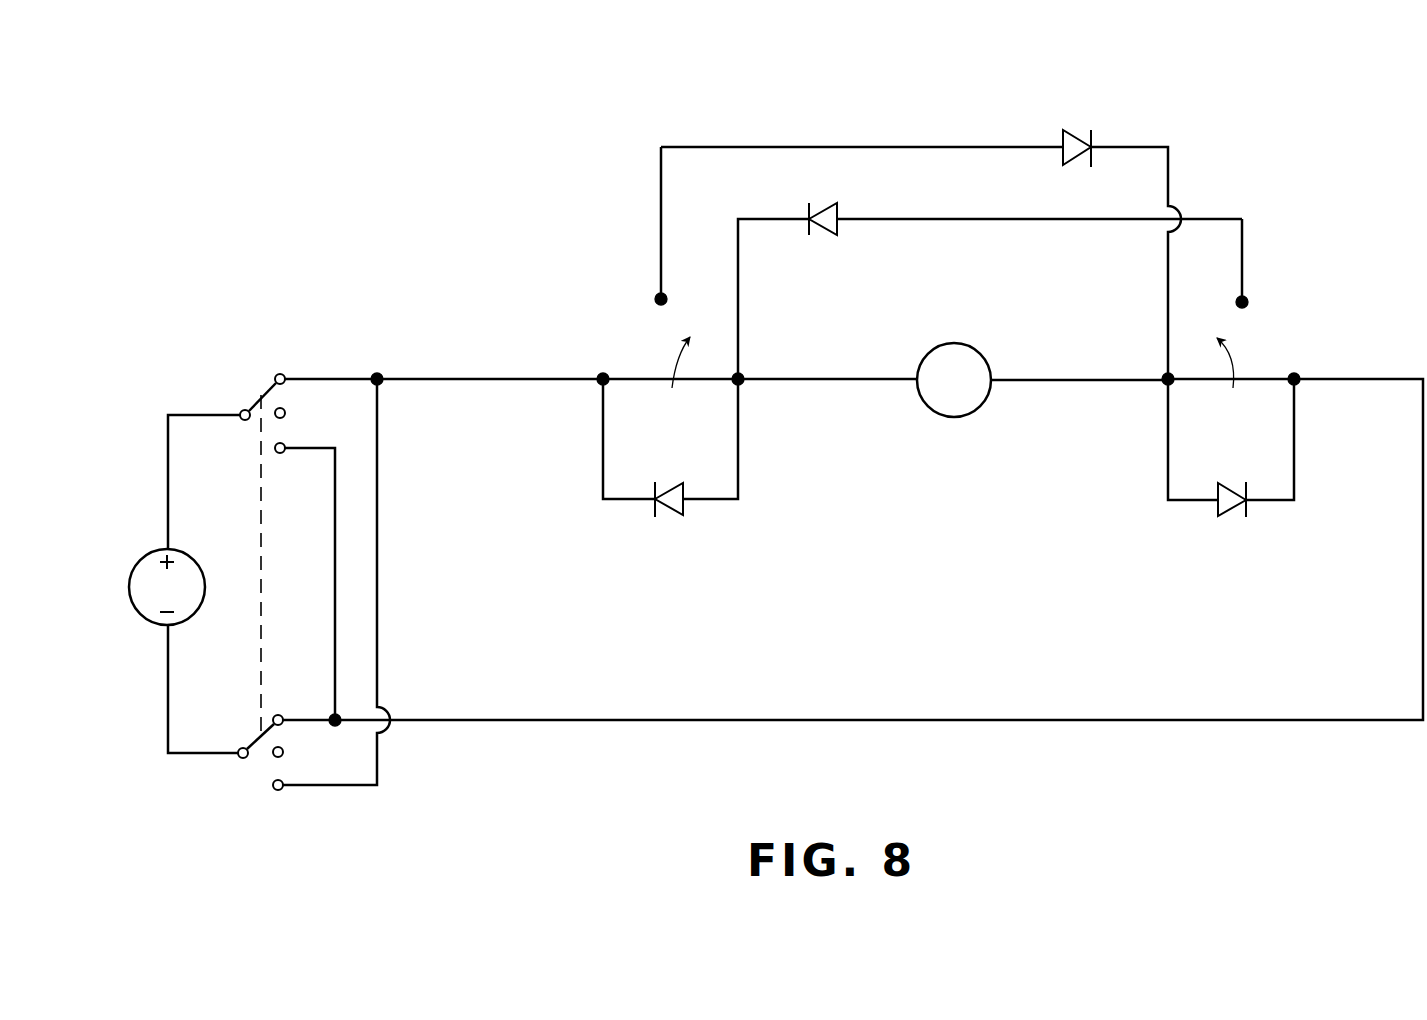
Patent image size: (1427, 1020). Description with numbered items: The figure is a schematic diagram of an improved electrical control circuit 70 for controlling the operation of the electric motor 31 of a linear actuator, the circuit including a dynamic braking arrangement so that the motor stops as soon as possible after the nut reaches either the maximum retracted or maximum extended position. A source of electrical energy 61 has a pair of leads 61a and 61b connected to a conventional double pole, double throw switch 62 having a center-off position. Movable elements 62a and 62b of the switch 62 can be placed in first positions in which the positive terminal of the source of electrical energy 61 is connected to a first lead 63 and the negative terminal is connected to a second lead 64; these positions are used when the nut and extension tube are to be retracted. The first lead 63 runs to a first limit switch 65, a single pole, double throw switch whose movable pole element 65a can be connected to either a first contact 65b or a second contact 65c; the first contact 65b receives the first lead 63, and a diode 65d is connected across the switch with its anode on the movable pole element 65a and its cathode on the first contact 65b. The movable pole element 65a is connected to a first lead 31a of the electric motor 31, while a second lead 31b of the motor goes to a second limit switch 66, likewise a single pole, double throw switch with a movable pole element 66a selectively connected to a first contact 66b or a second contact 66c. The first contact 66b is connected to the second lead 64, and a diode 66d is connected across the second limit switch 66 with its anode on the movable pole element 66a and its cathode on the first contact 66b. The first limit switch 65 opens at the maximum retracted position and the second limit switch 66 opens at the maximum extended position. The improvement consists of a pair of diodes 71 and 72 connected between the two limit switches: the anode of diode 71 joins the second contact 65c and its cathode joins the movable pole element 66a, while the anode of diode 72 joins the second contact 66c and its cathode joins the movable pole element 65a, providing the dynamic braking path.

The electric motor 31 is at (955, 415).
The first lead of the electric motor 31a is at (836, 382).
The second lead of the electric motor 31b is at (1067, 382).
The source of electrical energy 61 is at (150, 565).
The lead 61a is at (205, 415).
The lead 61b is at (205, 755).
The double pole, double throw switch 62 is at (359, 590).
The movable element 62a is at (262, 397).
The movable element 62b is at (256, 750).
The first lead 63 is at (430, 377).
The second lead 64 is at (538, 722).
The first limit switch 65 is at (685, 374).
The movable pole element 65a is at (705, 377).
The first contact 65b is at (600, 377).
The second contact 65c is at (660, 299).
The diode 65d is at (673, 517).
The second limit switch 66 is at (1274, 407).
The movable pole element 66a is at (1193, 378).
The first contact 66b is at (1296, 378).
The second contact 66c is at (1244, 301).
The diode 66d is at (1231, 517).
The control circuit 70 is at (1337, 168).
The diode 71 is at (1075, 140).
The diode 72 is at (825, 232).